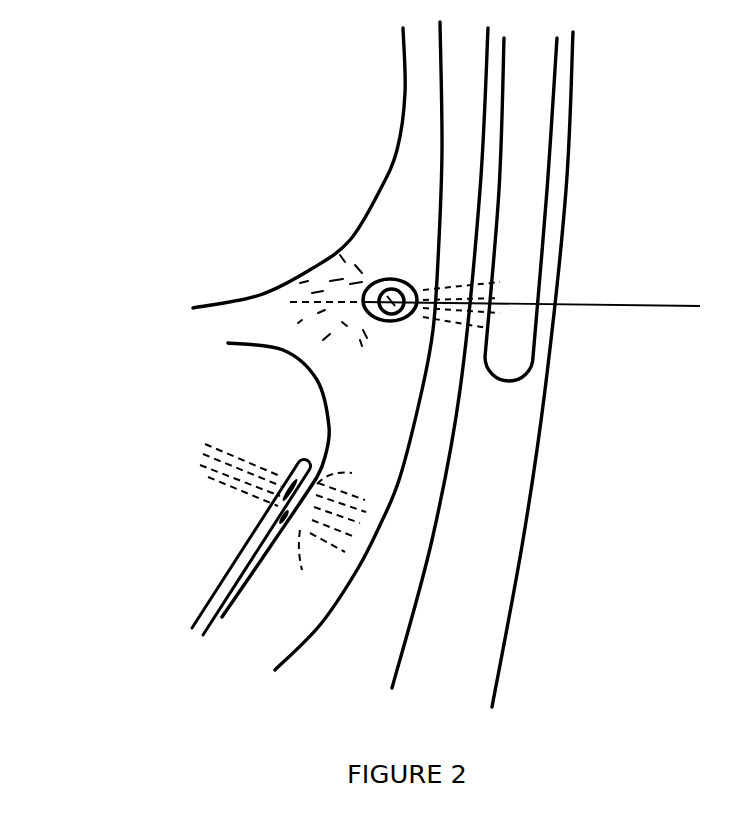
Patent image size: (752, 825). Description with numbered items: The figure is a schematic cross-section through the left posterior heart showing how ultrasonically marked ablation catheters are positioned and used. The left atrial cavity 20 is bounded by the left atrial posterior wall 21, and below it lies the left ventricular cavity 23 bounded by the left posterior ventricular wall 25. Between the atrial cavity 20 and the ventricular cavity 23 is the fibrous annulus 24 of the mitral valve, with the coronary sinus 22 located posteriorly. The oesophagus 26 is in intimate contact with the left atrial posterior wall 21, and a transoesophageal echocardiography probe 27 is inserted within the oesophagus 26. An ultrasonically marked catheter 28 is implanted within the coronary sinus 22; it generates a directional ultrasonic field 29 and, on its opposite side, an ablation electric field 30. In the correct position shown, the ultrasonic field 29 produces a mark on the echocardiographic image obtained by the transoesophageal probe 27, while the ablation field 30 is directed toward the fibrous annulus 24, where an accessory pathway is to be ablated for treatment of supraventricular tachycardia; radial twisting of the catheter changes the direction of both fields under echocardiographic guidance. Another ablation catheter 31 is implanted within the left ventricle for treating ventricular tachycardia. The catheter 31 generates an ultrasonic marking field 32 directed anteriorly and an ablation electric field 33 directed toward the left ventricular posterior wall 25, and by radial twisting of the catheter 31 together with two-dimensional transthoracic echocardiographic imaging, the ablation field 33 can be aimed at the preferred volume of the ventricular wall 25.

The left atrial cavity 20 is at (251, 107).
The left atrial posterior wall 21 is at (428, 107).
The coronary sinus 22 is at (399, 279).
The left ventricular cavity 23 is at (275, 480).
The fibrous annulus 24 is at (248, 322).
The left posterior ventricular wall 25 is at (268, 603).
The oesophagus 26 is at (493, 501).
The transoesophageal echocardiography probe 27 is at (519, 246).
The ultrasonically marked catheter 28 is at (405, 313).
The ultrasonic field 29 is at (532, 288).
The ablation electric field 30 is at (333, 300).
The ablation catheter 31 is at (210, 615).
The ultrasonic marking field 32 is at (220, 463).
The ablation electric field 33 is at (330, 517).